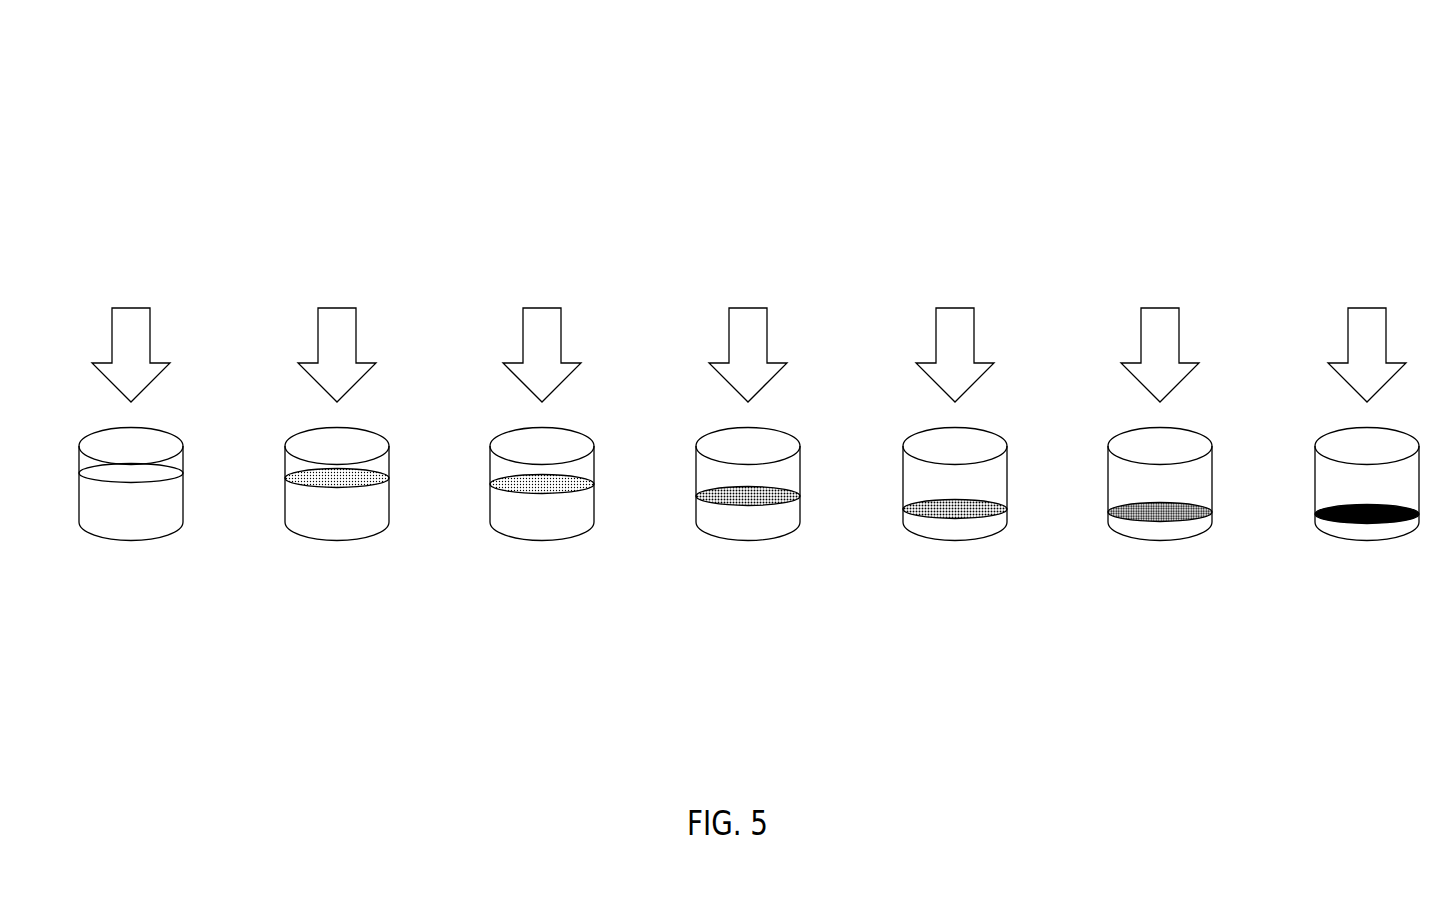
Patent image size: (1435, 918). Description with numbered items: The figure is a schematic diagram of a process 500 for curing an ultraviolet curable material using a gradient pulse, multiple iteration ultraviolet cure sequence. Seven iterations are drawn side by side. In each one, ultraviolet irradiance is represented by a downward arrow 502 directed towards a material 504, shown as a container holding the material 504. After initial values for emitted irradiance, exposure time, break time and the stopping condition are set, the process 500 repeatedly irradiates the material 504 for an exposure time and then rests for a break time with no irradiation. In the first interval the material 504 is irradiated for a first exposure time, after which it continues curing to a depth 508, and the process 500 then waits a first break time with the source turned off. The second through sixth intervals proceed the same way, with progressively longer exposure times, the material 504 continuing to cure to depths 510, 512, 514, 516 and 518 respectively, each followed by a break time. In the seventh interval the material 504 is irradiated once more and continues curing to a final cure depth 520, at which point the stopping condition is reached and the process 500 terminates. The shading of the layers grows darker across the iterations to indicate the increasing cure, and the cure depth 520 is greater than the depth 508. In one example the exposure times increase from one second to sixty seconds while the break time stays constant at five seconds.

The process 500 is at (270, 72).
The downward arrow 502 is at (749, 343).
The material 504 is at (734, 510).
The depth 508 is at (183, 472).
The depth 510 is at (389, 477).
The depth 512 is at (594, 483).
The depth 514 is at (800, 497).
The depth 516 is at (1007, 510).
The depth 518 is at (1212, 512).
The final cure depth 520 is at (1327, 507).